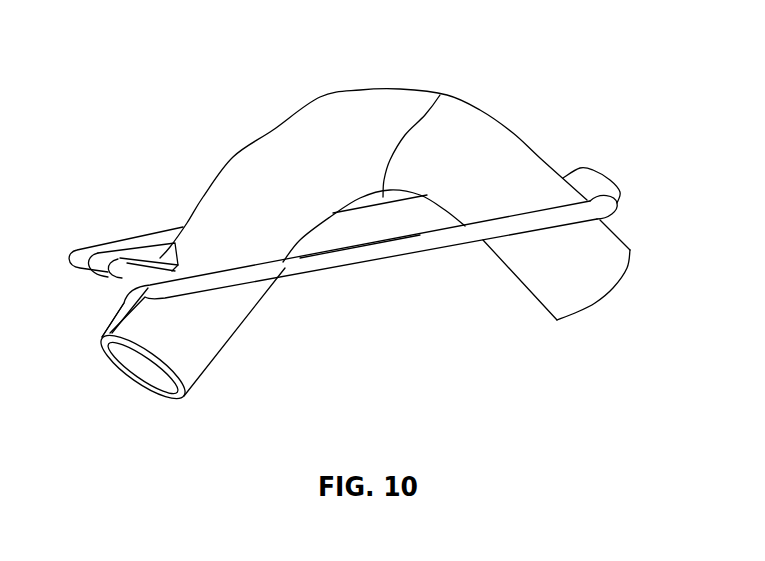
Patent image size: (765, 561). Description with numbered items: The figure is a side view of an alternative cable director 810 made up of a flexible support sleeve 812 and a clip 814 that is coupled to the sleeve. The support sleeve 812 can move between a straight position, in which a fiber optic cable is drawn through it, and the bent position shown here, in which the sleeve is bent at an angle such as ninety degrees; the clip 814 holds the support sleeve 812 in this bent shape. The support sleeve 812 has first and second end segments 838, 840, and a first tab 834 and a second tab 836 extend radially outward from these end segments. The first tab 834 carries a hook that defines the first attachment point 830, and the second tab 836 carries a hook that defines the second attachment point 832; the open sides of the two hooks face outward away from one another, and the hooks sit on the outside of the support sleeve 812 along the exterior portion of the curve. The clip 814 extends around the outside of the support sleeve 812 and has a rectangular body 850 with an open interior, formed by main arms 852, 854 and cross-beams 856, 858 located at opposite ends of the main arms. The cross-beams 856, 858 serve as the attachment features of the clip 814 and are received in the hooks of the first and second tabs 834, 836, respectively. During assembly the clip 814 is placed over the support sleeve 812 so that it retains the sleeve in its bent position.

The cable director 810 is at (214, 82).
The support sleeve 812 is at (345, 102).
The clip 814 is at (382, 263).
The first attachment point 830 is at (103, 280).
The second attachment point 832 is at (604, 183).
The first tab 834 is at (145, 268).
The second tab 836 is at (590, 176).
The first end segment 838 is at (224, 348).
The second end segment 840 is at (524, 293).
The rectangular body 850 is at (437, 240).
The main arm 852 is at (300, 268).
The main arm 854 is at (440, 95).
The cross-beam 856 is at (112, 330).
The cross-beam 858 is at (600, 210).